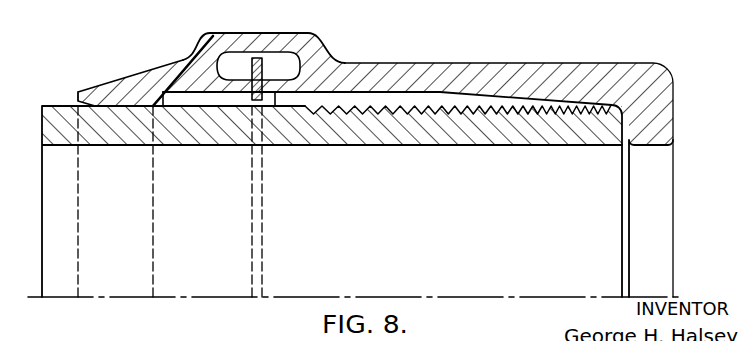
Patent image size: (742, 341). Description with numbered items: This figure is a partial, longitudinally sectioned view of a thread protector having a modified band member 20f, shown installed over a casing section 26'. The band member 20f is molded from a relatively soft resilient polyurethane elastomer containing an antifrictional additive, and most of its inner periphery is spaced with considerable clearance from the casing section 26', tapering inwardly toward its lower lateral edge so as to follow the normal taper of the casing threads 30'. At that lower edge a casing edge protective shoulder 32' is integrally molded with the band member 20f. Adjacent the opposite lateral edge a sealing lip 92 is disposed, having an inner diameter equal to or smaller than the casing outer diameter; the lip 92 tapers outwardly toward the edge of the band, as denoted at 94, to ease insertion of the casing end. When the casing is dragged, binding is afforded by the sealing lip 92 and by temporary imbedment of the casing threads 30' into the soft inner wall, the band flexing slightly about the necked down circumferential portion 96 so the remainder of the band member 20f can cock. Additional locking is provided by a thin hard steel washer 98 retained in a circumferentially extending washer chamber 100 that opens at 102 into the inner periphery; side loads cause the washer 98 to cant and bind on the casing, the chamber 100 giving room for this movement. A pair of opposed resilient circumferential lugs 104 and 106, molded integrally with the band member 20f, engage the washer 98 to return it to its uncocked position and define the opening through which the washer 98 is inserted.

The band member 20f is at (399, 73).
The necked down circumferential portion 96 is at (160, 83).
The washer chamber 100 is at (285, 63).
The opening of washer chamber 102 is at (268, 52).
The washer 98 is at (257, 55).
The circumferential lug 104 is at (250, 101).
The circumferential lug 106 is at (275, 107).
The sealing lip 92 is at (153, 108).
The outward taper of sealing lip 94 is at (91, 117).
The casing section 26' is at (332, 201).
The casing threads 30' is at (458, 76).
The casing edge protective shoulder 32' is at (669, 209).